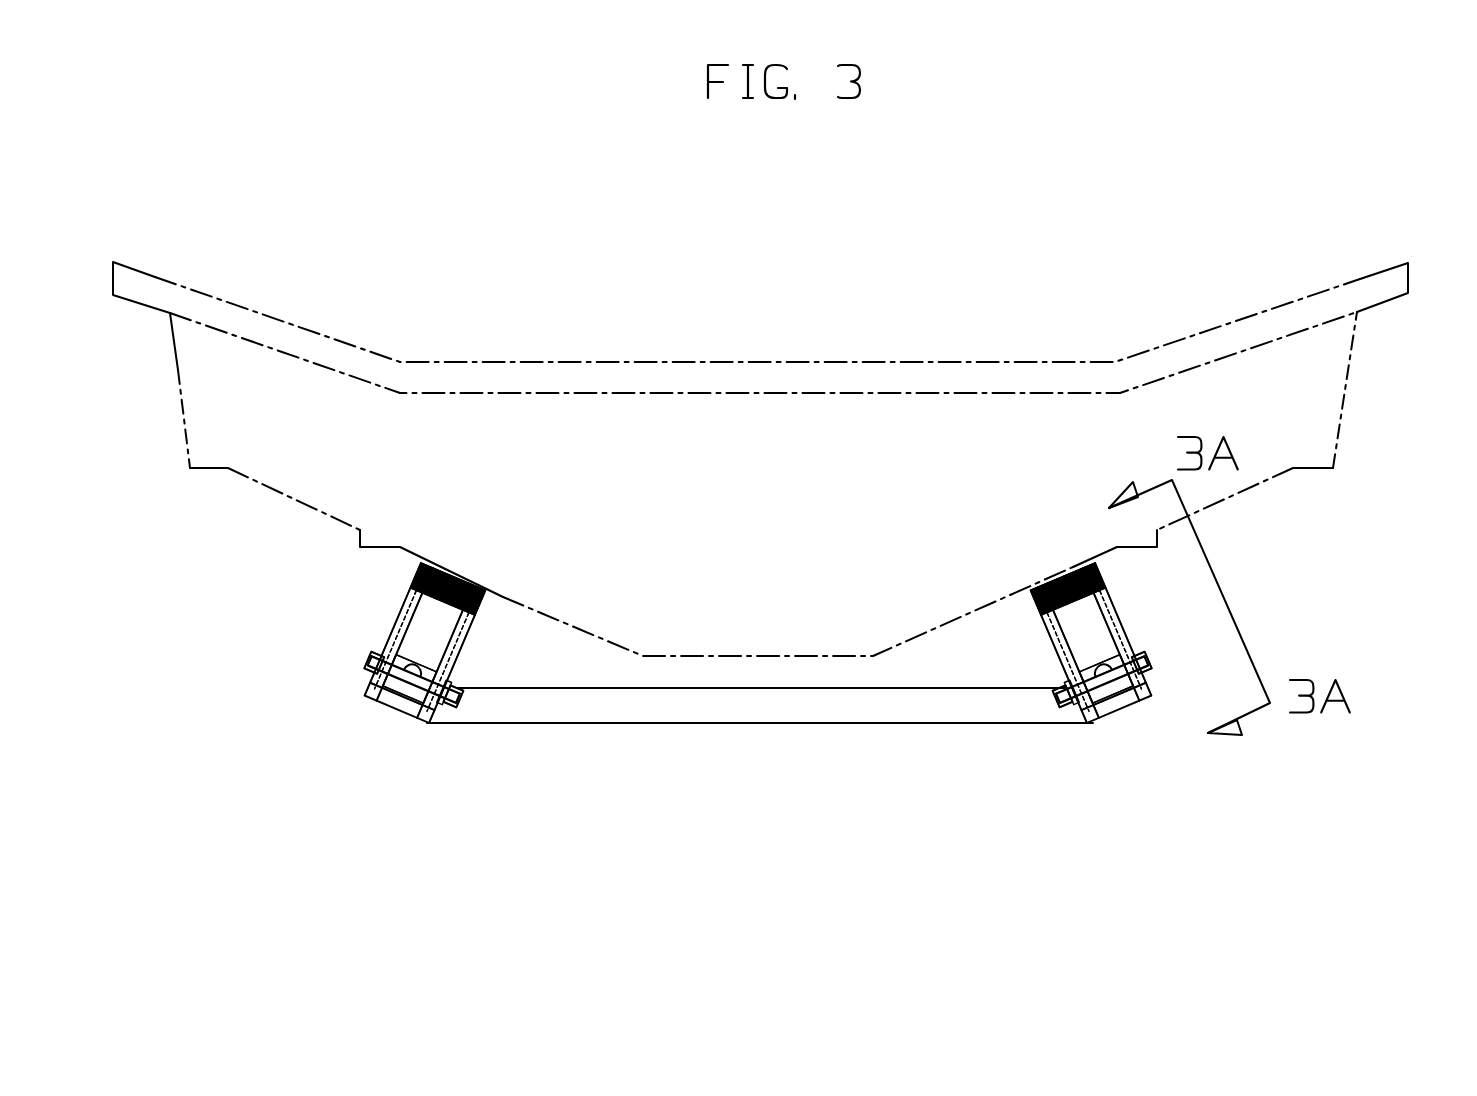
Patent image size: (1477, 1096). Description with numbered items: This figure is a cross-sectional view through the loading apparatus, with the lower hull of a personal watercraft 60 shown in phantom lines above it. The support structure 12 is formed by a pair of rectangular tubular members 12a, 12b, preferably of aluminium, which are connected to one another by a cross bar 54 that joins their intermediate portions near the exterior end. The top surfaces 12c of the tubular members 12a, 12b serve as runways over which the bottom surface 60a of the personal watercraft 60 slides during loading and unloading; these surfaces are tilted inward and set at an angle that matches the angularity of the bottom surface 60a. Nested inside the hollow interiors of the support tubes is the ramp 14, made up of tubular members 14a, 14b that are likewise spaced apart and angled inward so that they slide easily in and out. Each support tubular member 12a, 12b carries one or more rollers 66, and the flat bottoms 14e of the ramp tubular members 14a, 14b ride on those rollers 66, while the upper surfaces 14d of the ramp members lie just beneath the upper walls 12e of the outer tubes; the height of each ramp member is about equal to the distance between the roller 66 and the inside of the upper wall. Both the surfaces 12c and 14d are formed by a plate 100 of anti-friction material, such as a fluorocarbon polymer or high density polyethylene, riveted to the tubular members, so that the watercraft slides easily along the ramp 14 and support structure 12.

The support structure 12 is at (503, 817).
The tubular member 12a is at (470, 632).
The tubular member 12b is at (1057, 650).
The top surface 12c is at (453, 575).
The upper wall 12e is at (425, 580).
The ramp 14 is at (1367, 633).
The tubular member 14a is at (410, 628).
The tubular member 14b is at (1142, 698).
The upper surface 14d is at (482, 603).
The flat bottom 14e is at (412, 705).
The cross bar 54 is at (752, 724).
The personal watercraft 60 is at (763, 362).
The bottom surface 60a is at (668, 657).
The roller 66 is at (382, 696).
The plate 100 is at (417, 592).